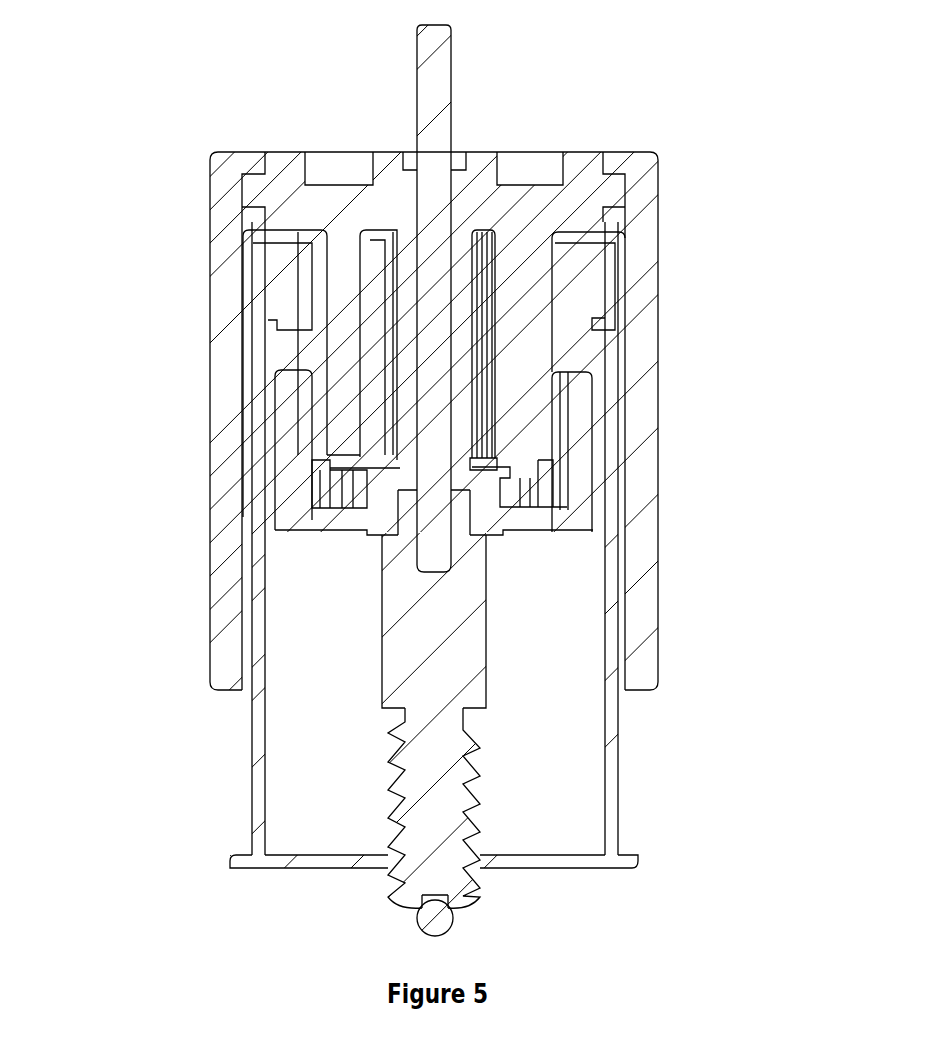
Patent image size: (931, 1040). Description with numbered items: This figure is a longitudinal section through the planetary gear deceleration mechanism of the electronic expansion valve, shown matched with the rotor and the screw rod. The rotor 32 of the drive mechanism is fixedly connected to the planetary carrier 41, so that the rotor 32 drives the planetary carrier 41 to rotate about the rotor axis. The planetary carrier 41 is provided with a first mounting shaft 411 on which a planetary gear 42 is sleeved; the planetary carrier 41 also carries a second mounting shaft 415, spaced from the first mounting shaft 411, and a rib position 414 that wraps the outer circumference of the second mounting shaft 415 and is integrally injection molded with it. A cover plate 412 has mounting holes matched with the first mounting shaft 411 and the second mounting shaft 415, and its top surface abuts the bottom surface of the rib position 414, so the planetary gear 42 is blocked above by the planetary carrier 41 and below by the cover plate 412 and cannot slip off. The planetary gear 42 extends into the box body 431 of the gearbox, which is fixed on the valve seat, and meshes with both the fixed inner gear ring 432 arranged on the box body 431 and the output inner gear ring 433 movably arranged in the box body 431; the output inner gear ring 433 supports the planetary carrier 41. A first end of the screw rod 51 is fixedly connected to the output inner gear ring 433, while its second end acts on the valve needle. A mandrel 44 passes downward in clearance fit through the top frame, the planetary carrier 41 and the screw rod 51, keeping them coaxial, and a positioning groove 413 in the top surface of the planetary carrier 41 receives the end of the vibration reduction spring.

The rotor 32 is at (235, 345).
The planetary carrier 41 is at (548, 213).
The planetary gear 42 is at (310, 395).
The mandrel 44 is at (437, 100).
The screw rod 51 is at (430, 648).
The first mounting shaft 411 is at (350, 425).
The cover plate 412 is at (318, 482).
The positioning groove 413 is at (405, 153).
The rib position 414 is at (520, 375).
The second mounting shaft 415 is at (550, 468).
The box body 431 is at (618, 590).
The fixed inner gear ring 432 is at (585, 280).
The output inner gear ring 433 is at (585, 487).